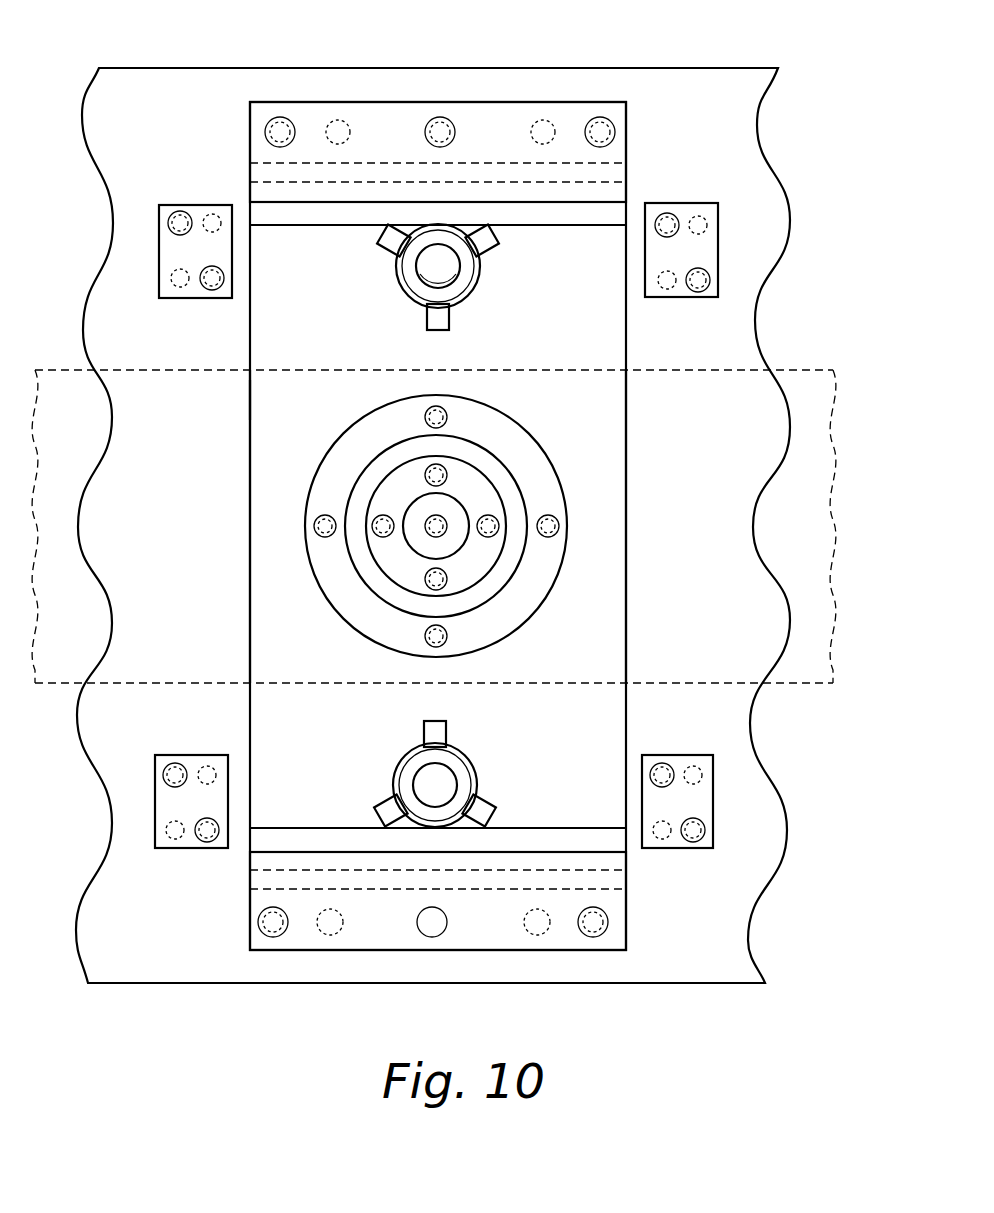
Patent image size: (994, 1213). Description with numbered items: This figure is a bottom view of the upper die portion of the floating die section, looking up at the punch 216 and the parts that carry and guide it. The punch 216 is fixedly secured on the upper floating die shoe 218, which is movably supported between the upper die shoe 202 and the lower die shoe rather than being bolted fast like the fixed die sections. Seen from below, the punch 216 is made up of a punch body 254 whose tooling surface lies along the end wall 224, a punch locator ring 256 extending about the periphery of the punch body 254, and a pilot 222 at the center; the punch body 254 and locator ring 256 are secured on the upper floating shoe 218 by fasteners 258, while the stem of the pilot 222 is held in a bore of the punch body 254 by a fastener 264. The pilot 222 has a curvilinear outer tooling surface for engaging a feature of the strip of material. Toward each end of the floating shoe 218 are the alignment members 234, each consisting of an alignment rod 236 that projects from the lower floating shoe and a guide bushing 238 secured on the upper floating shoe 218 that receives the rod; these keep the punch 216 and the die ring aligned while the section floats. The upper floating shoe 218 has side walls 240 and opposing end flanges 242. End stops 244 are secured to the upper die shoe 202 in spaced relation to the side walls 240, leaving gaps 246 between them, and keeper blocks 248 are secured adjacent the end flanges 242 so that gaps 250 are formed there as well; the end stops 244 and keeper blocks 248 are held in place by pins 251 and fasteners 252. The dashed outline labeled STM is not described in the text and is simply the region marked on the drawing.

The upper die shoe 202 is at (181, 86).
The scanning tunneling microscope region STM is at (797, 368).
The punch 216 is at (447, 517).
The upper floating die shoe 218 is at (268, 400).
The pilot 222 is at (365, 489).
The end wall 224 is at (360, 526).
The alignment member 234 is at (460, 180).
The alignment rod 236 is at (490, 266).
The guide bushing 238 is at (465, 281).
The side wall 240 is at (248, 587).
The end flange 242 is at (523, 822).
The end stop 244 is at (195, 208).
The gap 246 is at (245, 258).
The keeper block 248 is at (530, 108).
The gap 250 is at (628, 173).
The pin 251 is at (338, 118).
The fastener 252 is at (445, 115).
The punch body 254 is at (395, 558).
The punch locator ring 256 is at (501, 526).
The fastener 258 is at (436, 511).
The fastener 264 is at (515, 468).